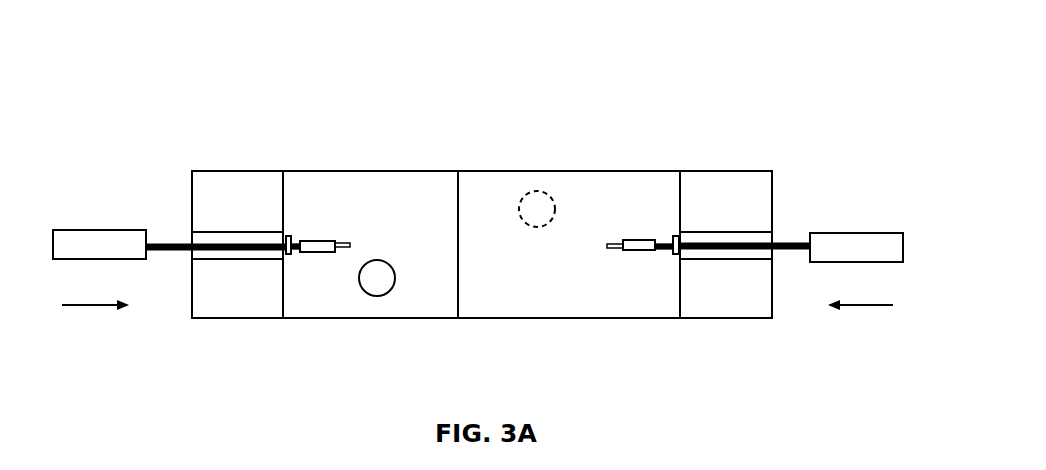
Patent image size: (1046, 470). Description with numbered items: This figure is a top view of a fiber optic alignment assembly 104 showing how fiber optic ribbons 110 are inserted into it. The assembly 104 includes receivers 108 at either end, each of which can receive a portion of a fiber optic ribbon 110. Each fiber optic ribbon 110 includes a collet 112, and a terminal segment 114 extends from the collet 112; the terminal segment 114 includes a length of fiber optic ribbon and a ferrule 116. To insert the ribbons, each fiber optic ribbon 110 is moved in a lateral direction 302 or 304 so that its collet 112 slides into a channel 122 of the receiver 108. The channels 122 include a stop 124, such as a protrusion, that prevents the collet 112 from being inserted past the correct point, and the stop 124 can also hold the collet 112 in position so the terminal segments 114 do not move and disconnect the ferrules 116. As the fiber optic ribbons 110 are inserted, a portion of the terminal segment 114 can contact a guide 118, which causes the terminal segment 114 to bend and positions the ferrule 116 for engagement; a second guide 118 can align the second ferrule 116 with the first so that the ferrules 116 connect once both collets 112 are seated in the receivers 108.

The fiber optic alignment assembly 104 is at (225, 40).
The receiver 108 is at (242, 300).
The fiber optic ribbon 110 is at (153, 125).
The collet 112 is at (75, 245).
The terminal segment 114 is at (232, 217).
The ferrule 116 is at (315, 241).
The guide 118 is at (537, 205).
The channel 122 is at (203, 236).
The stop 124 is at (288, 254).
The direction 302 is at (93, 307).
The direction 304 is at (867, 308).